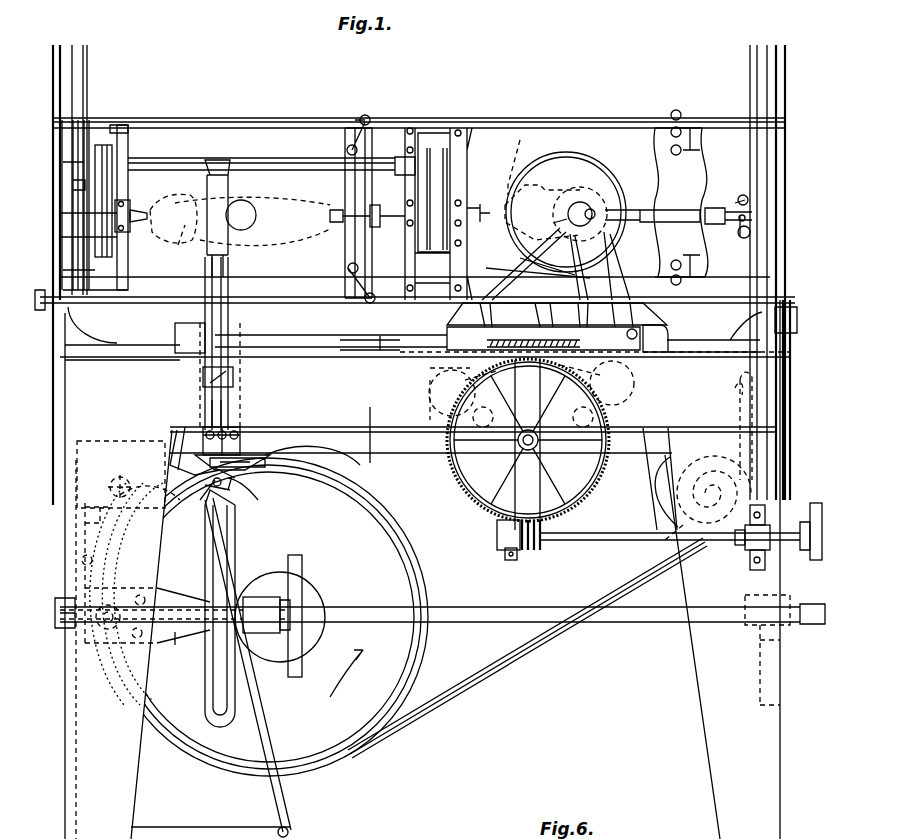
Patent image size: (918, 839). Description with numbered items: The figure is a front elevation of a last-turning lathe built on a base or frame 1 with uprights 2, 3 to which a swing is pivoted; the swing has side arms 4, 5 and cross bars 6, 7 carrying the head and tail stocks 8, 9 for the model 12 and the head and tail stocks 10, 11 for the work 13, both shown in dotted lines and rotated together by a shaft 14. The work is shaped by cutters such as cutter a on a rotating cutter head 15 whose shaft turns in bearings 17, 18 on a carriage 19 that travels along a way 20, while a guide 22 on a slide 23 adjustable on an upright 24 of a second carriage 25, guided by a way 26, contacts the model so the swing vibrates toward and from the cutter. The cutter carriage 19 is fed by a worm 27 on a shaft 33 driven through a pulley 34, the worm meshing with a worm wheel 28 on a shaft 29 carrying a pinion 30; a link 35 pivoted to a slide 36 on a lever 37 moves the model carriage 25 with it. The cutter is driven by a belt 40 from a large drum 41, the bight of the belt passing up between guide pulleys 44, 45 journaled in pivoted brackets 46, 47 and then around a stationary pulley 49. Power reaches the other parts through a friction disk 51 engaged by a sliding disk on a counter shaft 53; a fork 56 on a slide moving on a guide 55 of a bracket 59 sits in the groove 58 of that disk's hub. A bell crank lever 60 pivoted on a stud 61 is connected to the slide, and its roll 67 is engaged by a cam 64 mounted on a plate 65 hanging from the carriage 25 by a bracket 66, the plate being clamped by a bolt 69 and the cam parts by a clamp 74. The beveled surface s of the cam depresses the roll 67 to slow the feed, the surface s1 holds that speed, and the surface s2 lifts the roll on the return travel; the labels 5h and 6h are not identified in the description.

The base or frame 1 is at (368, 446).
The upright 2 is at (87, 90).
The upright 3 is at (750, 80).
The side arm 4 is at (60, 100).
The side arm 5 is at (786, 95).
The cross bar 6 is at (289, 118).
The cross bar 7 is at (400, 300).
The head stock 8 is at (120, 157).
The tail stock 9 is at (360, 205).
The head stock 10 is at (452, 175).
The tail stock 11 is at (658, 185).
The model 12 is at (167, 246).
The work 13 is at (565, 203).
The shaft 14 is at (262, 165).
The cutter head 15 is at (588, 205).
The bearing 17 is at (505, 252).
The bearing 18 is at (680, 232).
The carriage 19 is at (655, 338).
The way or guide 20 is at (714, 350).
The guide 22 is at (243, 200).
The slide 23 is at (232, 235).
The upright 24 is at (195, 181).
The carriage 25 is at (278, 335).
The way 26 is at (137, 357).
The worm 27 is at (560, 540).
The worm wheel 28 is at (485, 495).
The shaft 29 is at (505, 450).
The pinion 30 is at (558, 452).
The shaft 33 is at (612, 530).
The pulley 34 is at (817, 515).
The link 35 is at (380, 352).
The slide 36 is at (200, 315).
The lever 37 is at (205, 400).
The belt 40 is at (548, 270).
The drum 41 is at (420, 662).
The guide pulley 44 is at (440, 440).
The guide pulley 45 is at (642, 447).
The bracket 46 is at (432, 402).
The bracket 47 is at (637, 407).
The stationary pulley 49 is at (660, 497).
The friction disk 51 is at (455, 368).
The counter shaft 53 is at (483, 612).
The guide 55 is at (262, 634).
The fork 56 is at (253, 598).
The groove 58 is at (208, 567).
The bracket 59 is at (196, 608).
The bell crank lever 60 is at (193, 495).
The stud 61 is at (117, 470).
The cam 64 is at (250, 462).
The block or plate 65 is at (240, 445).
The bracket or arm 66 is at (240, 367).
The anti-friction roll 67 is at (228, 487).
The clamping bolt 69 is at (208, 423).
The clamp 74 is at (245, 490).
The cutter a is at (197, 497).
The beveled surface s is at (173, 466).
The under surface s1 is at (247, 484).
The return surface s2 is at (312, 447).
The disc 5h is at (300, 575).
The rod 6h is at (95, 535).